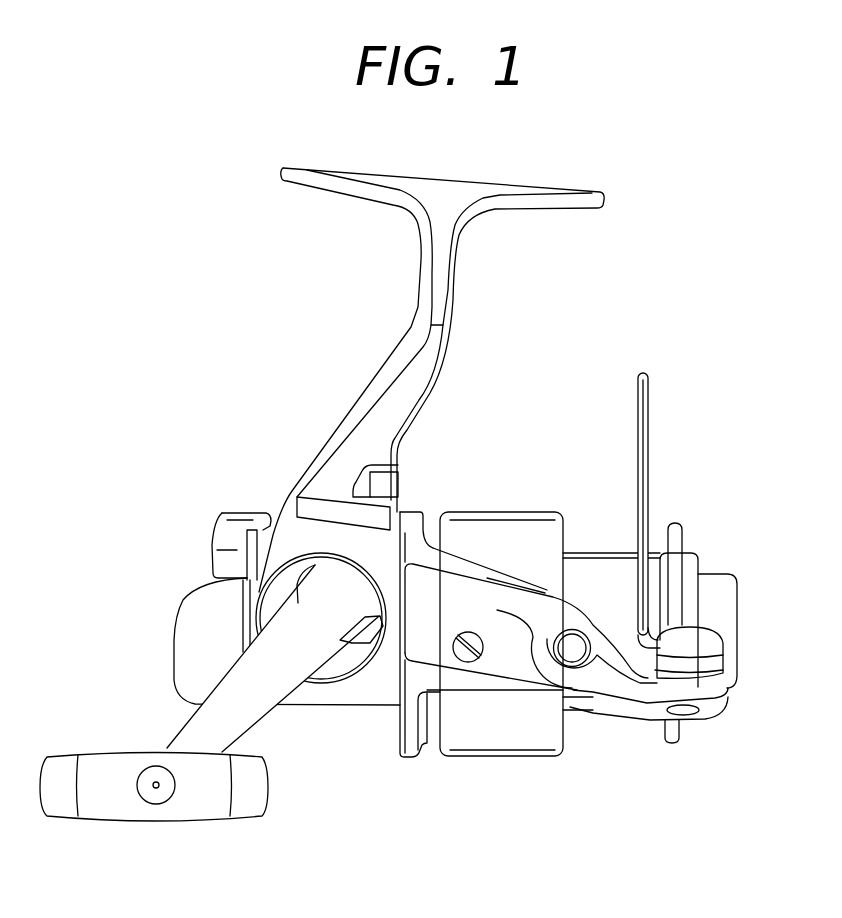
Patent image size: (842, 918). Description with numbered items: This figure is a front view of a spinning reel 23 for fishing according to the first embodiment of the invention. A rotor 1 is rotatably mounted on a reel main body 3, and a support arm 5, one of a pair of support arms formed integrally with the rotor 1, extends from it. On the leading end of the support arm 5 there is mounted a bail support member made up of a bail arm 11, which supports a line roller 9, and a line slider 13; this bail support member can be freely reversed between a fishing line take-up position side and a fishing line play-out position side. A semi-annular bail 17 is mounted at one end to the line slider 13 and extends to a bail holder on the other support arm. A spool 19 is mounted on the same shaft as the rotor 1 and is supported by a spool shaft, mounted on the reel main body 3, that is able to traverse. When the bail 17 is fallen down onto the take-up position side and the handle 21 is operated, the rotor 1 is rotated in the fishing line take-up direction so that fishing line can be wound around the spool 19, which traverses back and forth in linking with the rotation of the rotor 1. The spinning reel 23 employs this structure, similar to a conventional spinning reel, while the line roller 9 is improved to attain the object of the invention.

The rotor 1 is at (435, 738).
The reel main body 3 is at (272, 577).
The support arm 5 is at (517, 672).
The line roller 9 is at (707, 663).
The bail arm 11 is at (718, 697).
The line slider 13 is at (703, 638).
The bail 17 is at (650, 383).
The spool 19 is at (605, 567).
The handle 21 is at (195, 725).
The spinning reel 23 is at (336, 396).